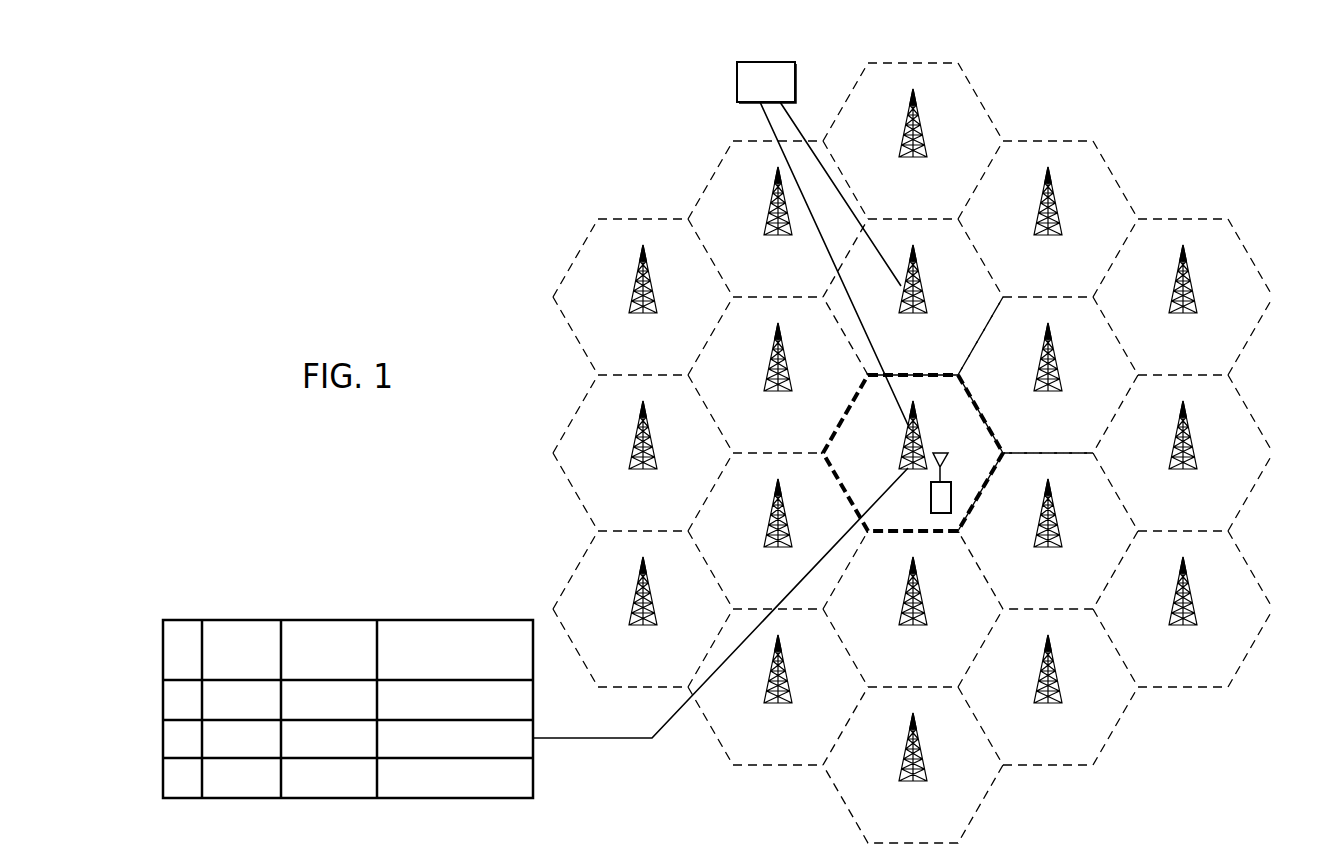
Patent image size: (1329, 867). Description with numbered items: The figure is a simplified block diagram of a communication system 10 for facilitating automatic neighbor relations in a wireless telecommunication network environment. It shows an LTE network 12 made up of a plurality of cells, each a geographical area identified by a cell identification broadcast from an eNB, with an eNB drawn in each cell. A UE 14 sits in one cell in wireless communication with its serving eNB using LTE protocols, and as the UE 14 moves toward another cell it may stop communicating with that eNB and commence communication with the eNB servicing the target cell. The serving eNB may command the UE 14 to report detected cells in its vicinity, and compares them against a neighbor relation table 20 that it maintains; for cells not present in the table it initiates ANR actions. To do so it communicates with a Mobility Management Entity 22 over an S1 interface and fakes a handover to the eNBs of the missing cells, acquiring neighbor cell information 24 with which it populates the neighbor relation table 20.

The communication system 10 is at (552, 124).
The LTE network 12 is at (1111, 171).
The UE 14 is at (931, 497).
The neighbor relation table 20 is at (348, 670).
The Mobility Management Entity 22 is at (737, 88).
The neighbor cell information 24 is at (476, 622).